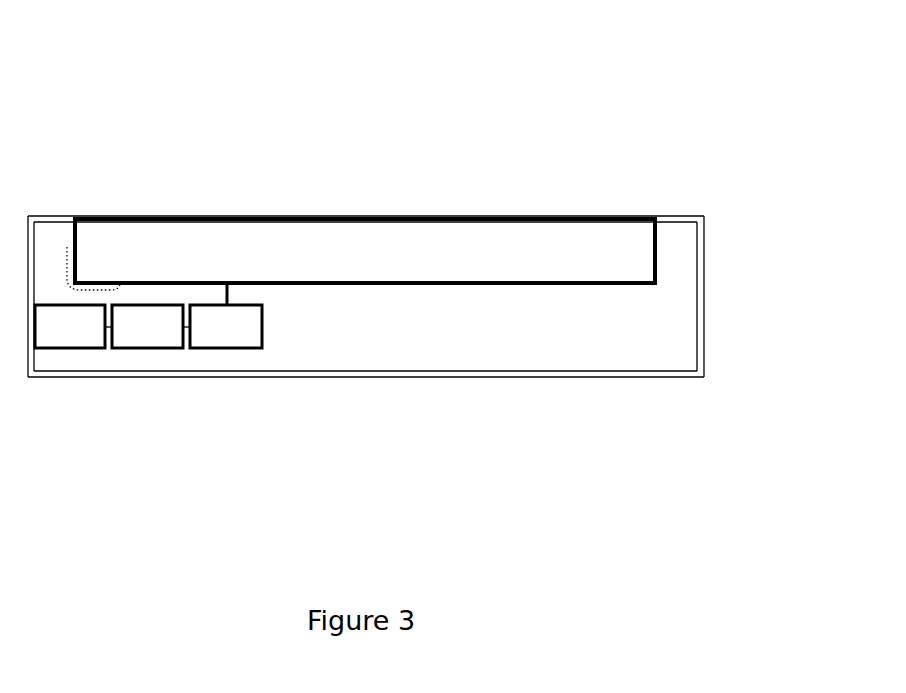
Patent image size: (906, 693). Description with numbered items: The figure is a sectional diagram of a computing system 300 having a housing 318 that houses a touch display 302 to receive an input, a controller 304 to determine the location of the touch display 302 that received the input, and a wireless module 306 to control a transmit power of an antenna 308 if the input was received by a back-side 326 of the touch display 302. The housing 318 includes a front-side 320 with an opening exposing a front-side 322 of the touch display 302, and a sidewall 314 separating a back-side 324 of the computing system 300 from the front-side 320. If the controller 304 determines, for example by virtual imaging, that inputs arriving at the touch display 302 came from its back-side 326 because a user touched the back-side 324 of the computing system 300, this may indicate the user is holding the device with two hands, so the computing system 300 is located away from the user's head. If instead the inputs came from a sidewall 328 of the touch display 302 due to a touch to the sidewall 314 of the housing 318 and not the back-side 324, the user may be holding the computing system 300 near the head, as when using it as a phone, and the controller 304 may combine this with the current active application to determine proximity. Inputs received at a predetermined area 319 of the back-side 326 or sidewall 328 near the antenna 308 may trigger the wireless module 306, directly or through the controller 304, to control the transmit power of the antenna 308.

The computing system 300 is at (108, 118).
The touch display 302 is at (421, 311).
The controller 304 is at (226, 315).
The wireless module 306 is at (151, 326).
The antenna 308 is at (73, 326).
The sidewall 314 is at (708, 238).
The housing 318 is at (405, 377).
The area 319 is at (97, 283).
The front-side 320 is at (680, 213).
The front-side of the touch display 322 is at (548, 217).
The back-side of the computing system 324 is at (572, 380).
The back-side of the touch display 326 is at (622, 290).
The sidewall of the touch display 328 is at (660, 265).